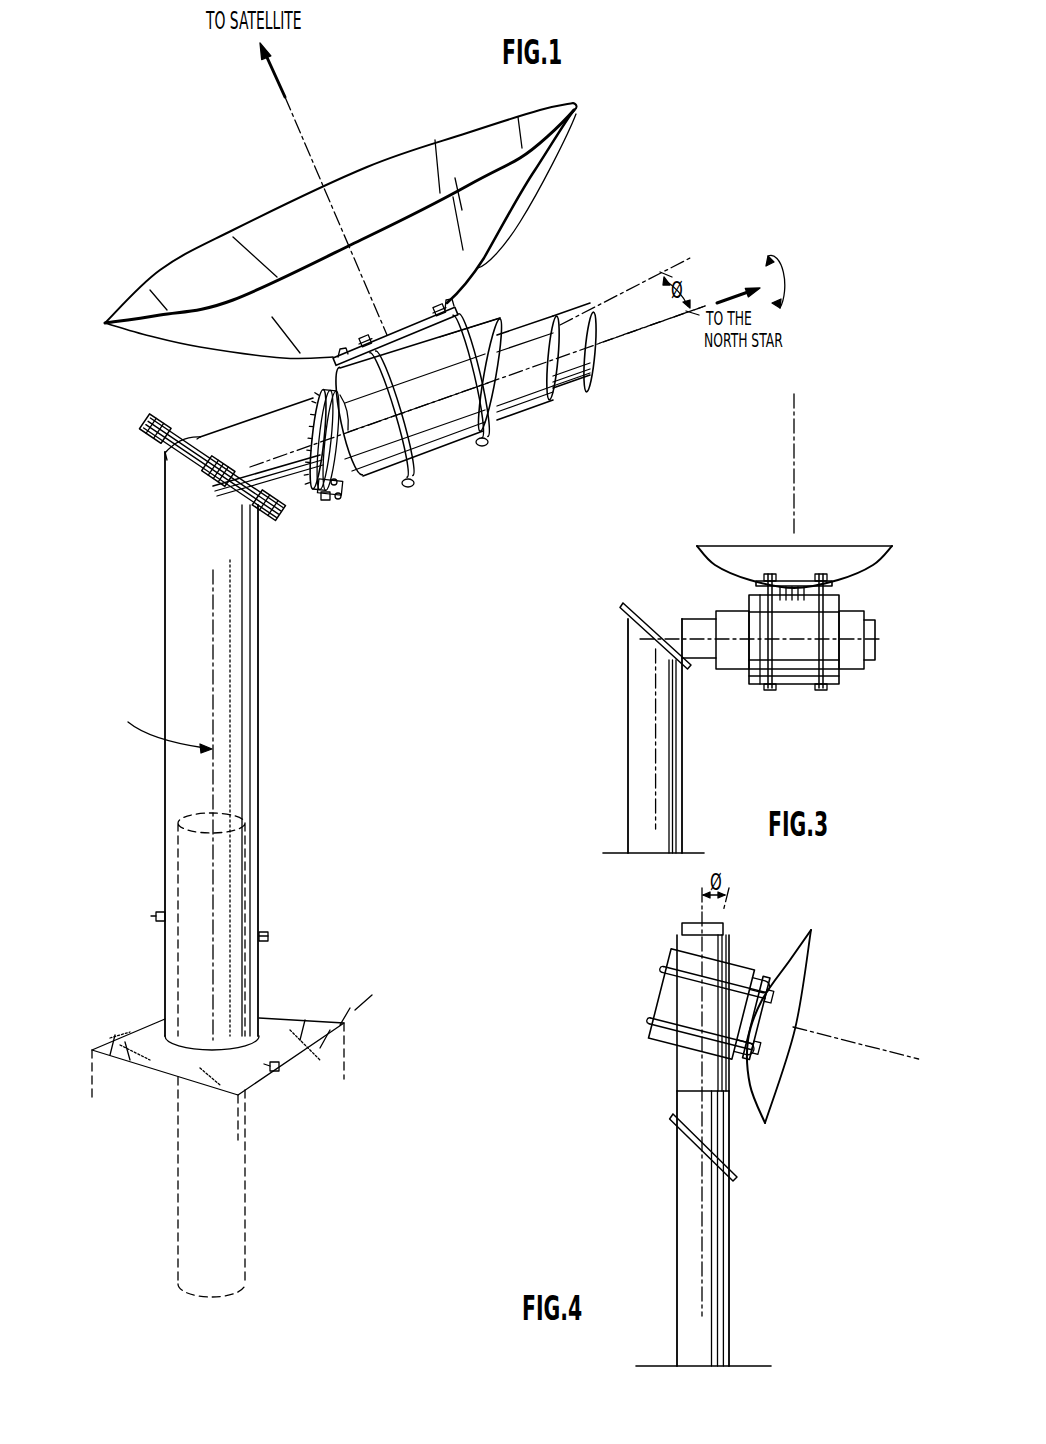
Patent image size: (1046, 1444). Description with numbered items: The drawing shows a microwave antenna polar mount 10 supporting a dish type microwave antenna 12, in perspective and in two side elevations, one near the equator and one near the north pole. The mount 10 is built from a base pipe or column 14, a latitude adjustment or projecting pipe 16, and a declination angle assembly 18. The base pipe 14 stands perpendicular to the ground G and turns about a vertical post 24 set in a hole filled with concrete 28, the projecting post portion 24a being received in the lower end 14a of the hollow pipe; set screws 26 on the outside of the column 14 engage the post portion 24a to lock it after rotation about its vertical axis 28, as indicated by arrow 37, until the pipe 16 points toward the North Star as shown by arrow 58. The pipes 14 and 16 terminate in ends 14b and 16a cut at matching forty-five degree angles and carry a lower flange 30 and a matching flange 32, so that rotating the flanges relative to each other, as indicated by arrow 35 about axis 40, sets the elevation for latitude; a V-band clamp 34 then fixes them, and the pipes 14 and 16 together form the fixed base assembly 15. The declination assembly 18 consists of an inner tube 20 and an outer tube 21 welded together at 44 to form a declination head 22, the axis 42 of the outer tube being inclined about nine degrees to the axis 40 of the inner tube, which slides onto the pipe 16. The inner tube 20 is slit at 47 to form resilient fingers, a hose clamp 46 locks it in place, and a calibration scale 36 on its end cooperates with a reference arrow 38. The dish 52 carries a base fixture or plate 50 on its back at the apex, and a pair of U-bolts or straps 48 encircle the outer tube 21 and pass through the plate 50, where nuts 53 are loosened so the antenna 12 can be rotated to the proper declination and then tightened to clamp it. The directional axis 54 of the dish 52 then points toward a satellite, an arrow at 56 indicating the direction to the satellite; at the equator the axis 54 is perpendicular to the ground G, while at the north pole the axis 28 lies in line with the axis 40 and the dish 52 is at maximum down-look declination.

In FIG. 1, the microwave antenna polar mount 10 is at (247, 874).
In FIG. 3, the microwave antenna polar mount 10 is at (640, 716).
In FIG. 4, the microwave antenna polar mount 10 is at (719, 1139).
In FIG. 1, the dish type microwave antenna 12 is at (355, 231).
In FIG. 1, the base pipe or column 14 is at (262, 722).
In FIG. 3, the base pipe or column 14 is at (625, 740).
In FIG. 4, the base pipe or column 14 is at (676, 1268).
In FIG. 1, the lower end of base pipe 14a is at (245, 1010).
In FIG. 1, the end of base pipe 14b is at (196, 470).
In FIG. 1, the latitude adjustment or base assembly 15 is at (260, 598).
In FIG. 1, the latitude adjustment or projecting pipe 16 is at (237, 424).
In FIG. 3, the latitude adjustment or projecting pipe 16 is at (672, 615).
In FIG. 4, the latitude adjustment or projecting pipe 16 is at (682, 930).
In FIG. 1, the end of latitude adjustment pipe 16a is at (222, 442).
In FIG. 1, the declination angle assembly 18 is at (466, 448).
In FIG. 3, the declination angle assembly 18 is at (810, 684).
In FIG. 4, the declination angle assembly 18 is at (658, 978).
In FIG. 1, the inner pipe or tube 20 is at (376, 484).
In FIG. 1, the outer pipe or tube 21 is at (524, 418).
In FIG. 1, the declination head 22 is at (503, 322).
In FIG. 3, the declination head 22 is at (796, 670).
In FIG. 1, the vertical post 24 is at (245, 1178).
In FIG. 1, the projecting post portion 24a is at (160, 980).
In FIG. 1, the set screws 26 is at (158, 910).
In FIG. 1, the axis of base pipe 28 is at (211, 610).
In FIG. 3, the axis of base pipe 28 is at (670, 790).
In FIG. 4, the axis of base pipe 28 is at (700, 1230).
In FIG. 1, the lower flange 30 is at (160, 437).
In FIG. 1, the matching flange 32 is at (163, 420).
In FIG. 1, the V-band clamp 34 is at (140, 418).
In FIG. 1, the arrow 35 is at (788, 296).
In FIG. 1, the calibration scale 36 is at (300, 404).
In FIG. 1, the arrow 37 is at (161, 731).
In FIG. 1, the reference arrow 38 is at (296, 418).
In FIG. 1, the axis of latitude adjustment pipe 40 is at (640, 312).
In FIG. 4, the axis of latitude adjustment pipe 40 is at (698, 903).
In FIG. 1, the axis of outer pipe 42 is at (618, 270).
In FIG. 4, the axis of outer pipe 42 is at (735, 908).
In FIG. 1, the weld 44 is at (335, 385).
In FIG. 1, the hose clamp 46 is at (320, 480).
In FIG. 1, the slit 47 is at (335, 418).
In FIG. 1, the U-bolts or straps 48 is at (365, 337).
In FIG. 3, the U-bolts or straps 48 is at (760, 665).
In FIG. 4, the U-bolts or straps 48 is at (705, 985).
In FIG. 1, the base fixture or plate 50 is at (428, 315).
In FIG. 3, the base fixture or plate 50 is at (794, 590).
In FIG. 4, the base fixture or plate 50 is at (752, 985).
In FIG. 1, the dish 52 is at (533, 204).
In FIG. 3, the dish 52 is at (850, 560).
In FIG. 4, the dish 52 is at (770, 1070).
In FIG. 1, the nuts 53 is at (345, 346).
In FIG. 1, the directional axis of dish 54 is at (308, 140).
In FIG. 3, the directional axis of dish 54 is at (796, 468).
In FIG. 4, the directional axis of dish 54 is at (866, 1050).
In FIG. 1, the direction to satellite 56 is at (284, 84).
In FIG. 1, the arrow 58 is at (745, 284).
In FIG. 1, the ground G is at (344, 1010).
In FIG. 3, the ground G is at (690, 852).
In FIG. 4, the ground G is at (742, 1364).